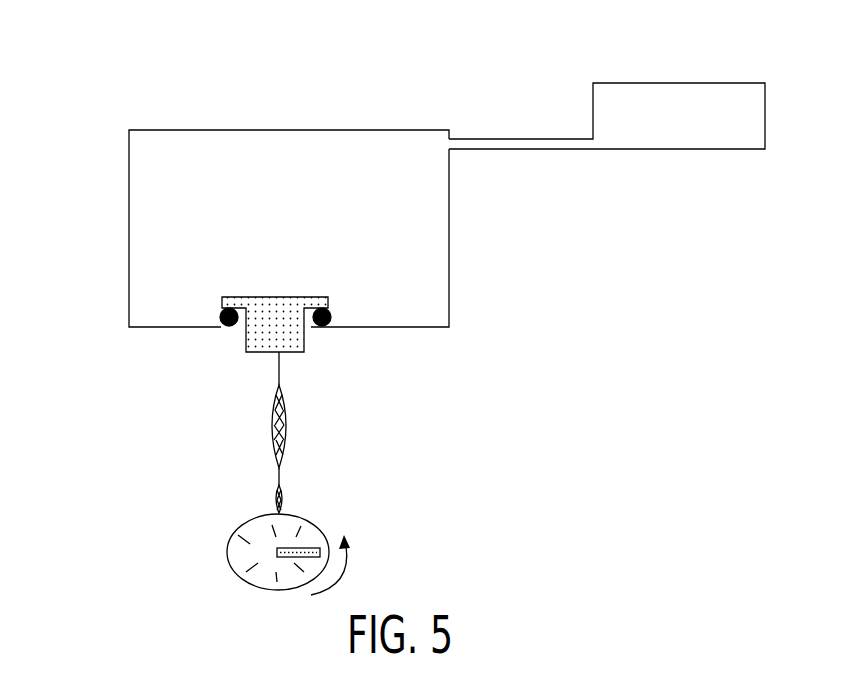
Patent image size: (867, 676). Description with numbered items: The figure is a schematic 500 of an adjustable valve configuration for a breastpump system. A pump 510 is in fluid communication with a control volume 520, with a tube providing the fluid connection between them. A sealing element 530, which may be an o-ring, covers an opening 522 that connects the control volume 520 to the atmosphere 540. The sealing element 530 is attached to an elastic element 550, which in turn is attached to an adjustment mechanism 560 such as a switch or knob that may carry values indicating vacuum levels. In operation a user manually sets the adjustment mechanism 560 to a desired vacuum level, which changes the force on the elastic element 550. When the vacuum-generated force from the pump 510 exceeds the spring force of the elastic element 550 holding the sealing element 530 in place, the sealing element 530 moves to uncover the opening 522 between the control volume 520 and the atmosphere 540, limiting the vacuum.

The schematic 500 is at (100, 260).
The pump 510 is at (743, 114).
The control volume 520 is at (255, 138).
The opening 522 is at (243, 330).
The sealing element 530 is at (288, 335).
The atmosphere 540 is at (623, 346).
The elastic element 550 is at (285, 412).
The adjustment mechanism 560 is at (292, 522).